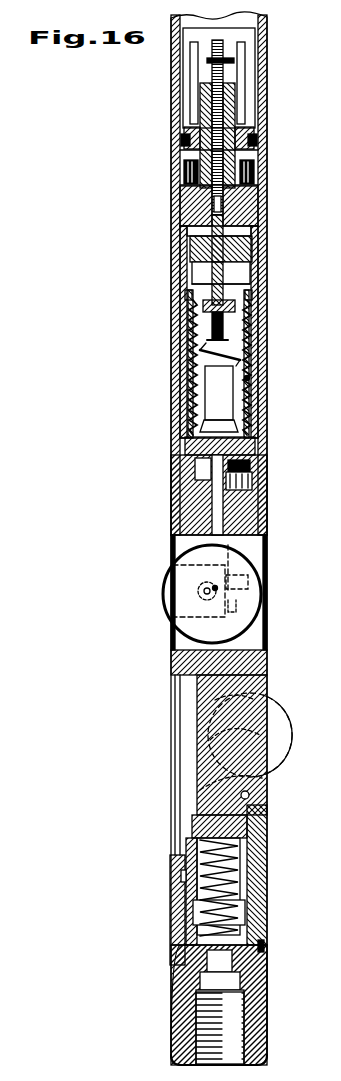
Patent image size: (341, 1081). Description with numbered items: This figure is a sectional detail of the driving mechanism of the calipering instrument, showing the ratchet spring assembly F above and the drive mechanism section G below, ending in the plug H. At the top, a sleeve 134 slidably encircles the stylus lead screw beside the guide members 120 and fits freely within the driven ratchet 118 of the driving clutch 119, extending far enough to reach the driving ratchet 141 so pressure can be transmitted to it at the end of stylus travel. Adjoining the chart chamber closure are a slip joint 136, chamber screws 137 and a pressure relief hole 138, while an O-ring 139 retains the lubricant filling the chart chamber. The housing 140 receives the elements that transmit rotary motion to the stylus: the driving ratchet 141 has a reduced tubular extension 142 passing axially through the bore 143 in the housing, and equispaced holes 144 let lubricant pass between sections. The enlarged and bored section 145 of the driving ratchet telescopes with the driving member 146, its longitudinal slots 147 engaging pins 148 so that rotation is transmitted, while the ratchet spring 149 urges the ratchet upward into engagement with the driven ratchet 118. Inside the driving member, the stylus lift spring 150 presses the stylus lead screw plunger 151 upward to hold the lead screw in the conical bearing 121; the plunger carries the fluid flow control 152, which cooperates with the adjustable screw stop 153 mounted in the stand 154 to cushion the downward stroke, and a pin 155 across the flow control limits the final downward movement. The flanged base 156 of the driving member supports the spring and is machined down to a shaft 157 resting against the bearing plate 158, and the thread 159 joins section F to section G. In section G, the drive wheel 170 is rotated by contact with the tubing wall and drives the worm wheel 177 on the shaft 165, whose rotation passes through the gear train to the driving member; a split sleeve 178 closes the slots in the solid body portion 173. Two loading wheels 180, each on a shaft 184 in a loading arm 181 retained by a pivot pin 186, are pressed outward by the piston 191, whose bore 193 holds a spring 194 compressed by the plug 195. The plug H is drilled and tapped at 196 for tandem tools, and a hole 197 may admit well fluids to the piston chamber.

The driven ratchet 118 is at (255, 120).
The driving clutch 119 is at (237, 124).
The guide rods 120 is at (243, 48).
The conical bearing 121 is at (192, 210).
The sleeve 134 is at (226, 70).
The slip joint 136 is at (262, 191).
The chamber screws 137 is at (265, 168).
The pressure relief hole 138 is at (177, 150).
The O-ring 139 is at (178, 143).
The housing 140 is at (171, 305).
The driving ratchet 141 is at (254, 270).
The reduced tubular extension 142 is at (270, 221).
The bore 143 is at (236, 197).
The equispaced holes 144 is at (177, 233).
The enlarged and bored section 145 is at (190, 277).
The driving member 146 is at (258, 405).
The longitudinal slots 147 is at (256, 312).
The pins 148 is at (262, 298).
The ratchet spring 149 is at (263, 392).
The stylus lift spring 150 is at (262, 378).
The stylus lead screw plunger 151 is at (258, 250).
The fluid flow control 152 is at (207, 319).
The adjustable screw stop 153 is at (188, 372).
The stand 154 is at (175, 438).
The pin 155 is at (208, 342).
The flanged base 156 is at (260, 441).
The shaft 157 is at (268, 486).
The bearing plate 158 is at (181, 470).
The thread 159 is at (273, 509).
The shaft 165 is at (245, 548).
The drive wheel 170 is at (160, 597).
The worm wheel 177 is at (262, 591).
The sleeve 178 is at (275, 615).
The loading wheels 180 is at (280, 718).
The loading arm 181 is at (268, 776).
The shaft 184 is at (265, 715).
The pivot pin 186 is at (272, 790).
The piston 191 is at (268, 823).
The solid body portion 173 is at (270, 843).
The bore 193 is at (232, 878).
The spring 194 is at (255, 906).
The plug 195 is at (268, 961).
The tapped hole 196 is at (190, 1022).
The hole 197 is at (174, 963).
The ratchet spring assembly F is at (170, 402).
The drive mechanism section G is at (170, 900).
The plug H is at (272, 1022).